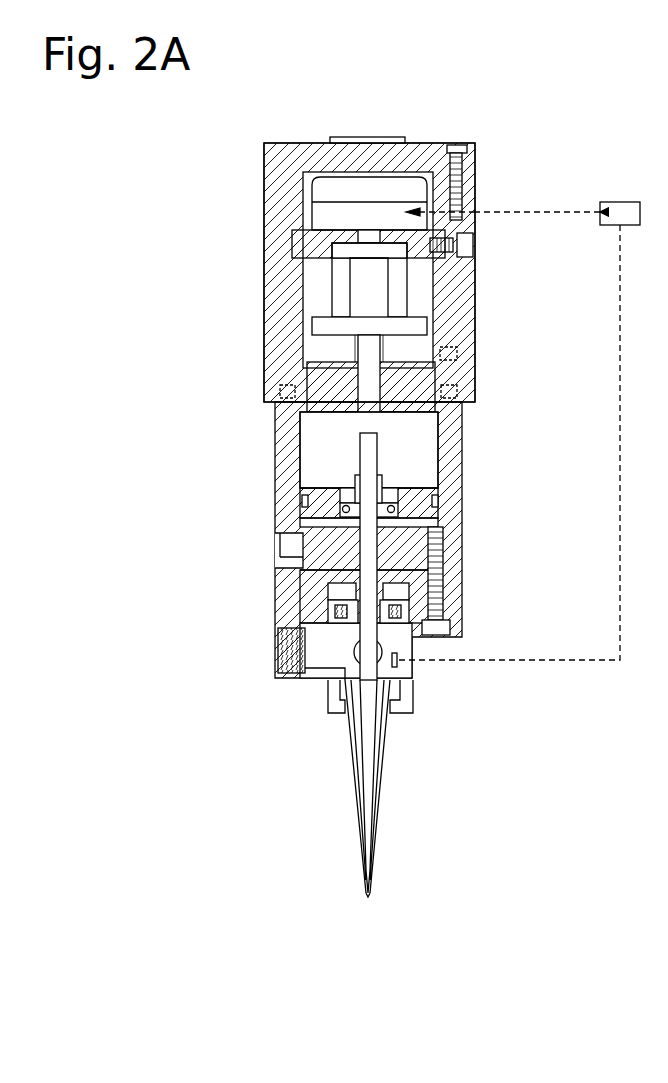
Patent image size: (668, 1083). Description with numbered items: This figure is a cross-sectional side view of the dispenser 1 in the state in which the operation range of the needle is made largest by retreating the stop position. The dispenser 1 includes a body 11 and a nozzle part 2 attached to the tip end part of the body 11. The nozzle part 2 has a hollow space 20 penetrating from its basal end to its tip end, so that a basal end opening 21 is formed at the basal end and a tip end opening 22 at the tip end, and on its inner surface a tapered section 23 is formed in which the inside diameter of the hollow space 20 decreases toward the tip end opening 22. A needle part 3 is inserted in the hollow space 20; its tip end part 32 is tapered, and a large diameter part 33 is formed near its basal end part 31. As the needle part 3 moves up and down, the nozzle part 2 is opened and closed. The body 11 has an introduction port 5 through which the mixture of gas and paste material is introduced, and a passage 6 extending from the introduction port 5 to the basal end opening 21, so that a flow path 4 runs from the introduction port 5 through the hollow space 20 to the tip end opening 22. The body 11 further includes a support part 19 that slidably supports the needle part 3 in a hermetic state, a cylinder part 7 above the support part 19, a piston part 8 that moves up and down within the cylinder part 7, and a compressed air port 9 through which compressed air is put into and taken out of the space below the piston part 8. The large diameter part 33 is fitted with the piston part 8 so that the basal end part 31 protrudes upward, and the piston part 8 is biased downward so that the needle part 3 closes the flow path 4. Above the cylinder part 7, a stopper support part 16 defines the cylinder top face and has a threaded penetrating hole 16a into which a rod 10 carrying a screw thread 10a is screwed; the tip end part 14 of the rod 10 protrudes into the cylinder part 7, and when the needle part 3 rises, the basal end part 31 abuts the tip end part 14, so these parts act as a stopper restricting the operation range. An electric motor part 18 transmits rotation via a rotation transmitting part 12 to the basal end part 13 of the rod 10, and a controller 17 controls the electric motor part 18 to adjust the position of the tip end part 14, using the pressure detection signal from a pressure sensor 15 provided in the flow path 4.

The dispenser 1 is at (422, 489).
The nozzle part 2 is at (365, 795).
The needle part 3 is at (360, 586).
The flow path 4 is at (345, 672).
The introduction port 5 is at (270, 650).
The passage 6 is at (332, 647).
The cylinder part 7 is at (305, 437).
The piston part 8 is at (313, 497).
The compressed air port 9 is at (283, 552).
The rod 10 is at (368, 368).
The screw thread 10a is at (383, 347).
The body 11 is at (262, 215).
The rotation transmitting part 12 is at (337, 262).
The basal end part 13 is at (420, 325).
The tip end part 14 is at (372, 450).
The pressure sensor 15 is at (395, 657).
The stopper support part 16 is at (390, 377).
The penetrating hole 16a is at (445, 392).
The controller 17 is at (628, 202).
The electric motor part 18 is at (407, 187).
The support part 19 is at (413, 617).
The hollow space 20 is at (400, 690).
The basal end opening 21 is at (345, 682).
The tip end opening 22 is at (370, 895).
The tapered section 23 is at (362, 743).
The basal end part 31 is at (368, 480).
The tip end part 32 is at (370, 830).
The large diameter part 33 is at (380, 512).